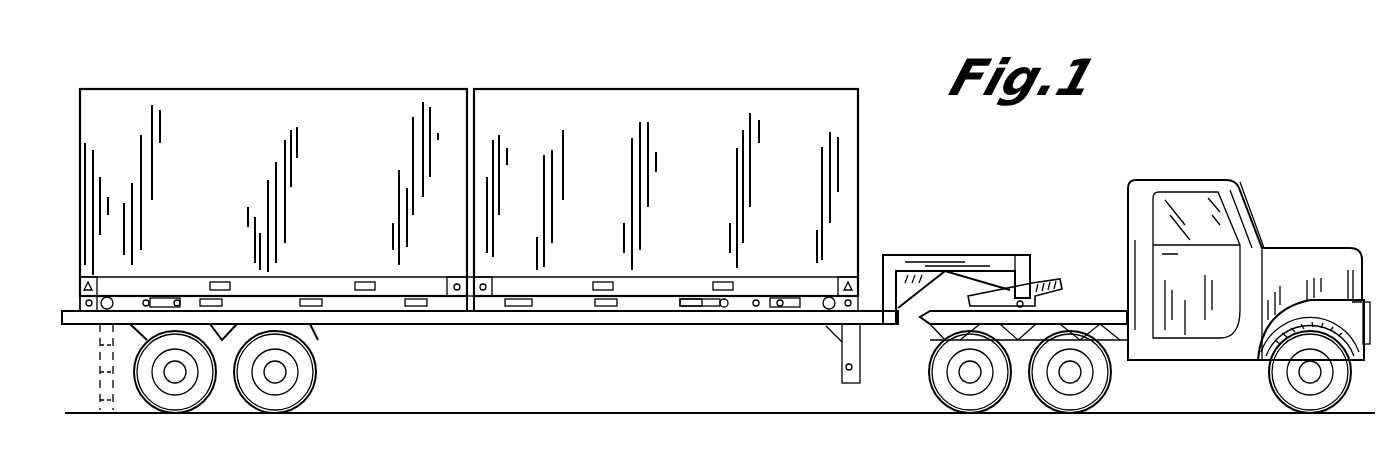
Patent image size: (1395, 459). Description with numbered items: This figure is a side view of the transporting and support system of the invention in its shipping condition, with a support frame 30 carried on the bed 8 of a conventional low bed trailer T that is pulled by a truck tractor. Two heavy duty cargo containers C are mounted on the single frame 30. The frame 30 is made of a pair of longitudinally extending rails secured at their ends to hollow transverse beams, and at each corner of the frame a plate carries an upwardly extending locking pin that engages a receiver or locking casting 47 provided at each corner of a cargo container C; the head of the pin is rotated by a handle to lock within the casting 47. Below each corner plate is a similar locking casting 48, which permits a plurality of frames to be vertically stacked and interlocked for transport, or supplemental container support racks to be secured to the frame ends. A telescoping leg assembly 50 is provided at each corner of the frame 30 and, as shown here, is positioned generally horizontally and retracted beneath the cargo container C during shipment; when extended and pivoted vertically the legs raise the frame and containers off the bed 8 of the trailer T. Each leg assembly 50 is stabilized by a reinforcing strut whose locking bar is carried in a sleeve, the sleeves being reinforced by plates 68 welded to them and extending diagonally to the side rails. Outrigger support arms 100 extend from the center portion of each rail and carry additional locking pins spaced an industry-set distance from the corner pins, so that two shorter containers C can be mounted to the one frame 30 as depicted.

The cargo container C is at (503, 79).
The trailer T is at (928, 251).
The trailer 8 is at (564, 335).
The primary support frame 30 is at (377, 321).
The locking casting 47 is at (89, 271).
The locking casting 48 is at (80, 305).
The leg assembly 50 is at (205, 240).
The reinforcing plate 68 is at (708, 308).
The outrigger support arm 100 is at (488, 320).